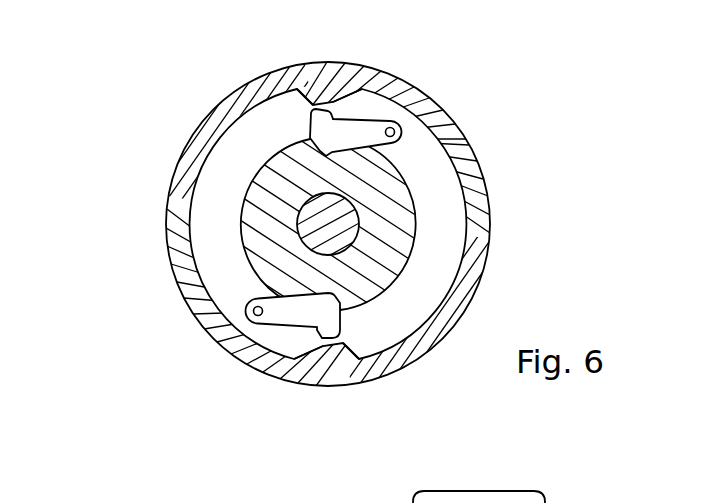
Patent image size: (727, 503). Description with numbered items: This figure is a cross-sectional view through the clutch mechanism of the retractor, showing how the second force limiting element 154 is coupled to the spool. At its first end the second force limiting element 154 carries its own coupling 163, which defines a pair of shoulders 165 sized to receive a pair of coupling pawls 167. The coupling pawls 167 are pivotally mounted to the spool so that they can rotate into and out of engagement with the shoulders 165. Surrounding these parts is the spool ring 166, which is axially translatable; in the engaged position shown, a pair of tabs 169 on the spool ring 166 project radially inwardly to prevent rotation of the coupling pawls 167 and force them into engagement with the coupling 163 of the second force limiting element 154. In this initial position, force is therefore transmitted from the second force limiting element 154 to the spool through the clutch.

The second force limiting element 154 is at (312, 227).
The coupling 163 is at (273, 202).
The shoulders 165 is at (268, 183).
The spool ring 166 is at (470, 175).
The coupling pawls 167 is at (367, 133).
The tabs 169 is at (262, 110).